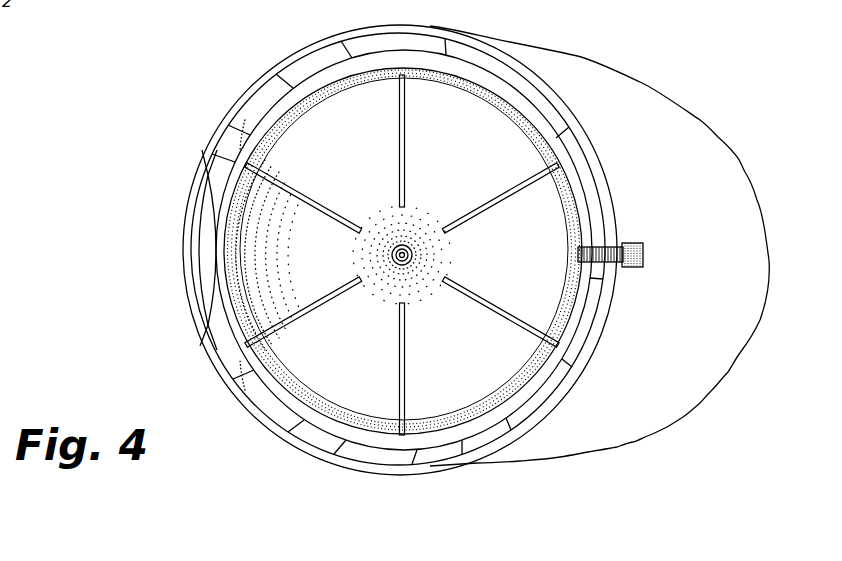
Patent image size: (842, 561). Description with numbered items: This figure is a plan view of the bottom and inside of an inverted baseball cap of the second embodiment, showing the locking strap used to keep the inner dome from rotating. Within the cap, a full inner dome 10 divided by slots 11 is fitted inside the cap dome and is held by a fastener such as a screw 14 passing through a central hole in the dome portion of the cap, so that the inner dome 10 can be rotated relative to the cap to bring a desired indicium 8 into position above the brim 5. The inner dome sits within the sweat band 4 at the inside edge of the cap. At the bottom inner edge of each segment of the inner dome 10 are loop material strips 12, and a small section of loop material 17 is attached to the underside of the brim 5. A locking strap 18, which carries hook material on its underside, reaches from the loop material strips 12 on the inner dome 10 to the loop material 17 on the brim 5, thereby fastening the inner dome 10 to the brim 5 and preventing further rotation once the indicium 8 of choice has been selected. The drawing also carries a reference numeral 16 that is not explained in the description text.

The sweat band 4 is at (375, 47).
The brim 5 is at (695, 121).
The indicium 8 is at (405, 22).
The full inner dome 10 is at (488, 114).
The slots 11 is at (316, 182).
The loop material strips 12 is at (287, 397).
The screw 14 is at (410, 247).
The clip 16 is at (183, 285).
The loop material section 17 is at (637, 269).
The locking strap 18 is at (645, 245).